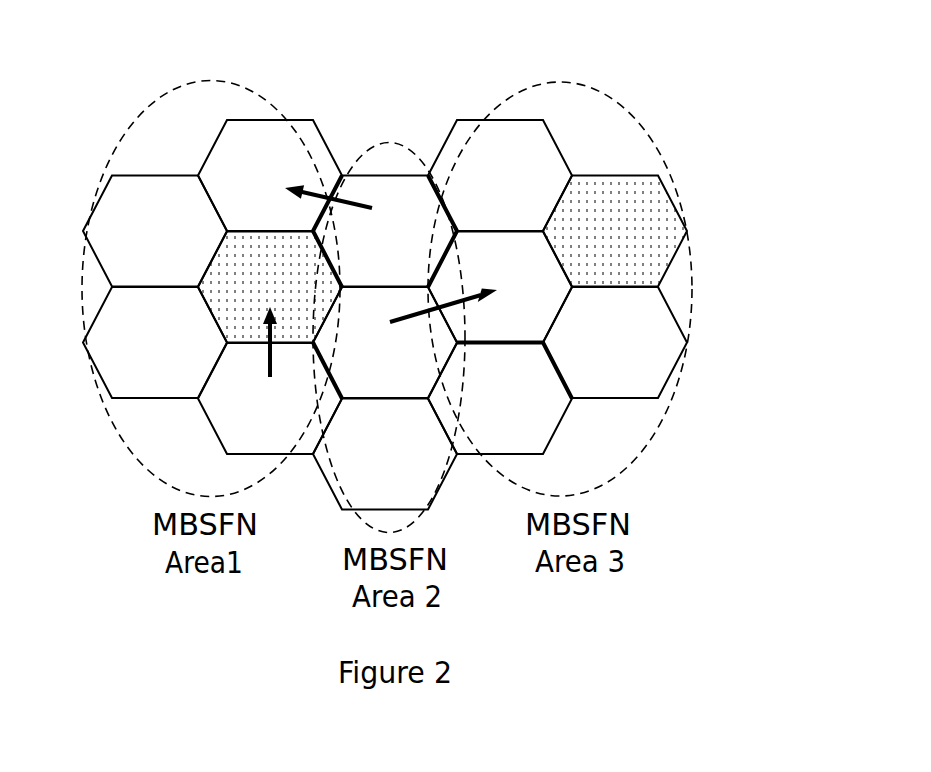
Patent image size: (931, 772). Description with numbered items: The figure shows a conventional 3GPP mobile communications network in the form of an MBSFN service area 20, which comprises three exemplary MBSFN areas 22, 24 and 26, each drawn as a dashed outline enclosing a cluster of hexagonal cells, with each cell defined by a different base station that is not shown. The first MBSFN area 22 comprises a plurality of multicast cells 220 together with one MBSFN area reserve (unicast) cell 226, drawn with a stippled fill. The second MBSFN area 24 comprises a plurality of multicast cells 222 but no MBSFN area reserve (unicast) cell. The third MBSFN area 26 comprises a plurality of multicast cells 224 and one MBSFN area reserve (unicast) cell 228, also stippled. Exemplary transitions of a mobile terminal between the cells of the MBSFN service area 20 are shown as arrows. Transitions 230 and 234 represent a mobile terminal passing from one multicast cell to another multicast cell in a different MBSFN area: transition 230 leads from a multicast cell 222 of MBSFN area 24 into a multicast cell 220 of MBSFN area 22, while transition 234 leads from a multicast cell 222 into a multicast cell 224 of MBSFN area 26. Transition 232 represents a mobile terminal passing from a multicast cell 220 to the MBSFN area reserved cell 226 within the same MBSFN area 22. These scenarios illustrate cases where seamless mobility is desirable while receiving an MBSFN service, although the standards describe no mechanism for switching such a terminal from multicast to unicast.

The MBSFN service area 20 is at (145, 30).
The MBSFN area 22 is at (138, 120).
The MBSFN area 24 is at (392, 148).
The MBSFN area 26 is at (635, 134).
The multicast cells 220 is at (188, 234).
The multicast cells 222 is at (410, 270).
The multicast cells 224 is at (530, 188).
The MBSFN area reserve (unicast) cell 226 is at (300, 287).
The MBSFN area reserve (unicast) cell 228 is at (653, 260).
The transition 230 is at (308, 190).
The transition 232 is at (268, 355).
The transition 234 is at (482, 292).